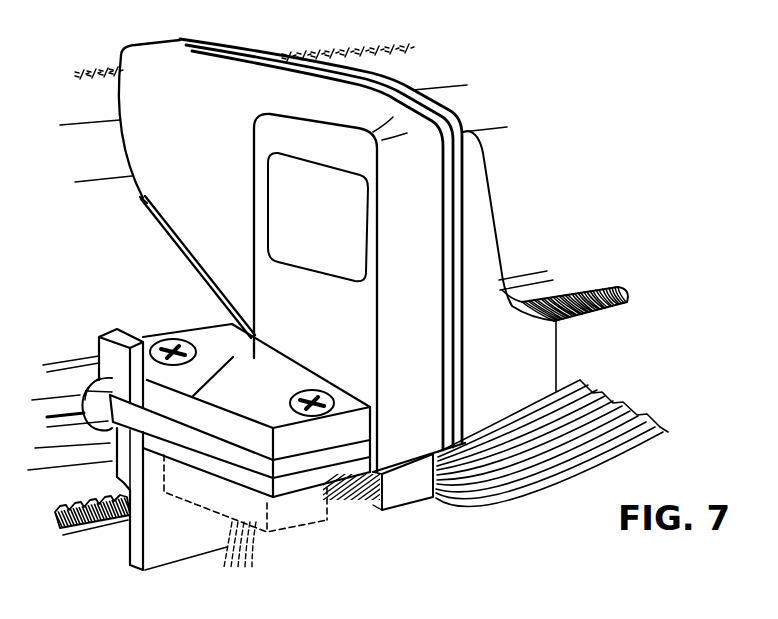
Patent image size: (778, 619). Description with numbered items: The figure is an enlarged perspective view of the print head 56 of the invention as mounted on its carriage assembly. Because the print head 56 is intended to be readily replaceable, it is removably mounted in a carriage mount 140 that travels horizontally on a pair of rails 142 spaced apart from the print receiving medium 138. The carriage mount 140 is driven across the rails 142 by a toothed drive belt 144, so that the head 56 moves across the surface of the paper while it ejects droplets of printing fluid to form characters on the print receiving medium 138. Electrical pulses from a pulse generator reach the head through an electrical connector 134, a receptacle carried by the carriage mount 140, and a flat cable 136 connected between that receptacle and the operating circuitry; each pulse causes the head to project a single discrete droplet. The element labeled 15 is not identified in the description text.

The print head housing front panel 15 is at (398, 310).
The print head 56 is at (476, 119).
The electrical connector 134 is at (413, 493).
The flat cable 136 is at (525, 490).
The print receiving medium 138 is at (413, 52).
The carriage mount 140 is at (556, 355).
The rails 142 is at (75, 355).
The toothed drive belt 144 is at (102, 525).